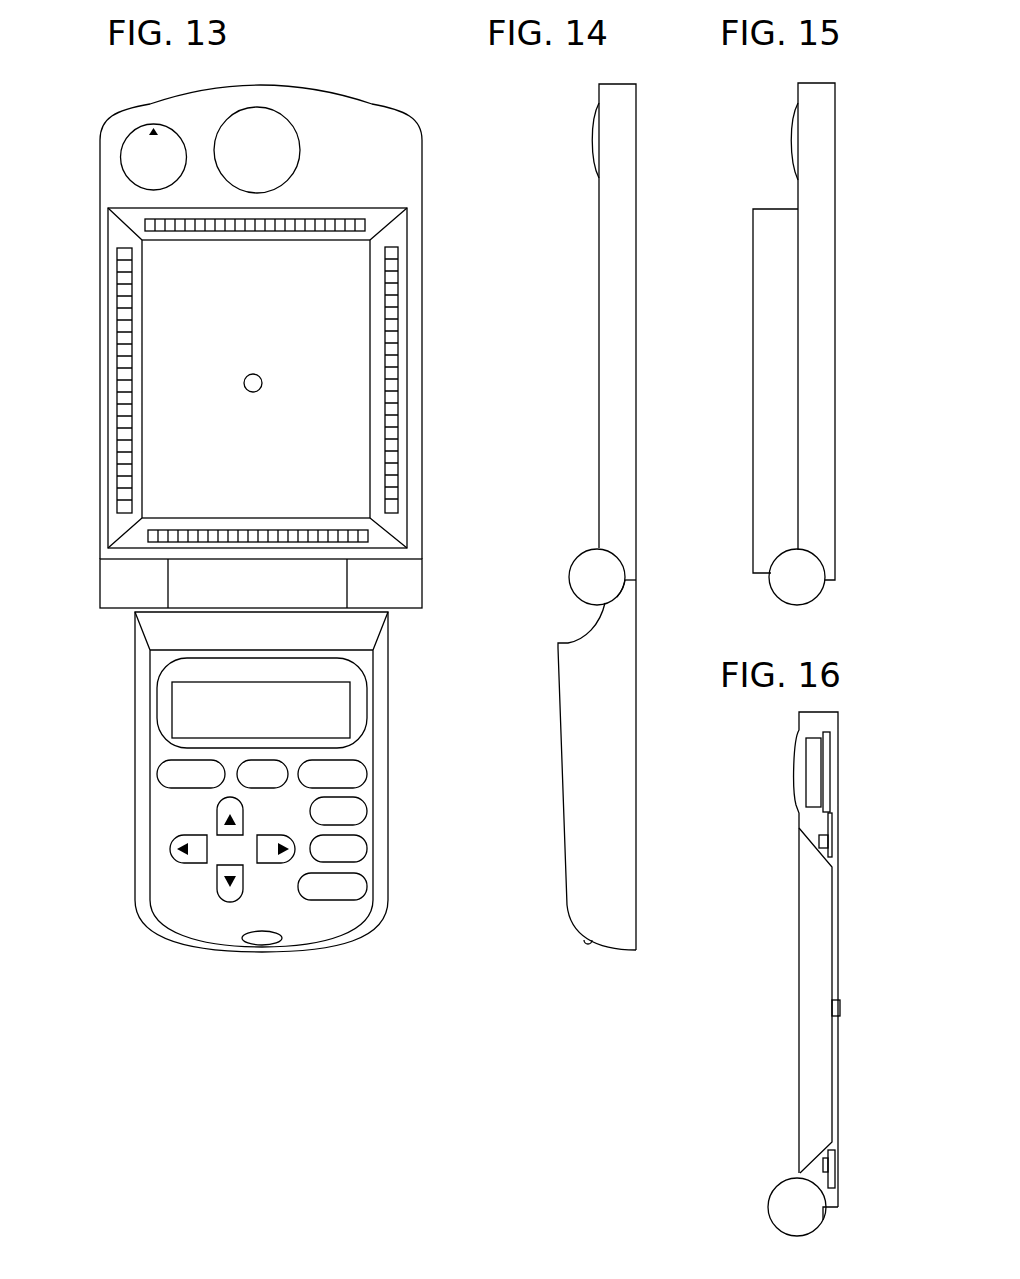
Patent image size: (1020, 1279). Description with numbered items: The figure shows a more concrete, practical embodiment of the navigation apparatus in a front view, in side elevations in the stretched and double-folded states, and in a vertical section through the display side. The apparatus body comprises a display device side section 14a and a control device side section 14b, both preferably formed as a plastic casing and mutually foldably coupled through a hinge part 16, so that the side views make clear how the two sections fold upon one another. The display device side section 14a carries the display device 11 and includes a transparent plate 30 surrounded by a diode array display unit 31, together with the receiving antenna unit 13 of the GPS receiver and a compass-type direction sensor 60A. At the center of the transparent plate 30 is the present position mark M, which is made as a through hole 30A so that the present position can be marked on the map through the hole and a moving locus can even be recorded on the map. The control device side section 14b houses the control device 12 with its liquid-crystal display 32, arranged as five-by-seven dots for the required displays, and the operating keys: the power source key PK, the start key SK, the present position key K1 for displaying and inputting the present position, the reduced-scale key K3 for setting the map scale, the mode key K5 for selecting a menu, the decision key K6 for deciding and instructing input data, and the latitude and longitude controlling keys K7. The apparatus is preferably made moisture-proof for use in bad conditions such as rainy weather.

In FIG. 13, the display device 11 is at (416, 325).
In FIG. 13, the control device 12 is at (156, 877).
In FIG. 13, the receiving antenna unit 13 is at (288, 122).
In FIG. 14, the receiving antenna unit 13 is at (595, 130).
In FIG. 15, the receiving antenna unit 13 is at (793, 130).
In FIG. 13, the display device side section 14a is at (423, 515).
In FIG. 14, the display device side section 14a is at (634, 276).
In FIG. 15, the display device side section 14a is at (835, 358).
In FIG. 16, the display device side section 14a is at (840, 768).
In FIG. 13, the control device side section 14b is at (388, 900).
In FIG. 14, the control device side section 14b is at (636, 790).
In FIG. 15, the control device side section 14b is at (752, 369).
In FIG. 13, the hinge part 16 is at (108, 590).
In FIG. 14, the hinge part 16 is at (588, 578).
In FIG. 15, the hinge part 16 is at (798, 585).
In FIG. 13, the transparent plate 30 is at (333, 270).
In FIG. 13, the through hole 30A is at (251, 392).
In FIG. 16, the through hole 30A is at (840, 1010).
In FIG. 13, the diode array display unit 31 is at (148, 538).
In FIG. 13, the liquid-crystal display 32 is at (337, 713).
In FIG. 13, the direction sensor 60A is at (139, 126).
In FIG. 13, the present position mark M is at (262, 383).
In FIG. 16, the present position mark M is at (832, 1010).
In FIG. 13, the power source key PK is at (157, 772).
In FIG. 13, the start key SK is at (365, 784).
In FIG. 13, the present position key K1 is at (362, 800).
In FIG. 13, the reduced-scale key K3 is at (280, 760).
In FIG. 13, the mode key K5 is at (367, 850).
In FIG. 13, the decision key K6 is at (345, 900).
In FIG. 13, the latitude and longitude controlling keys K7 is at (232, 902).